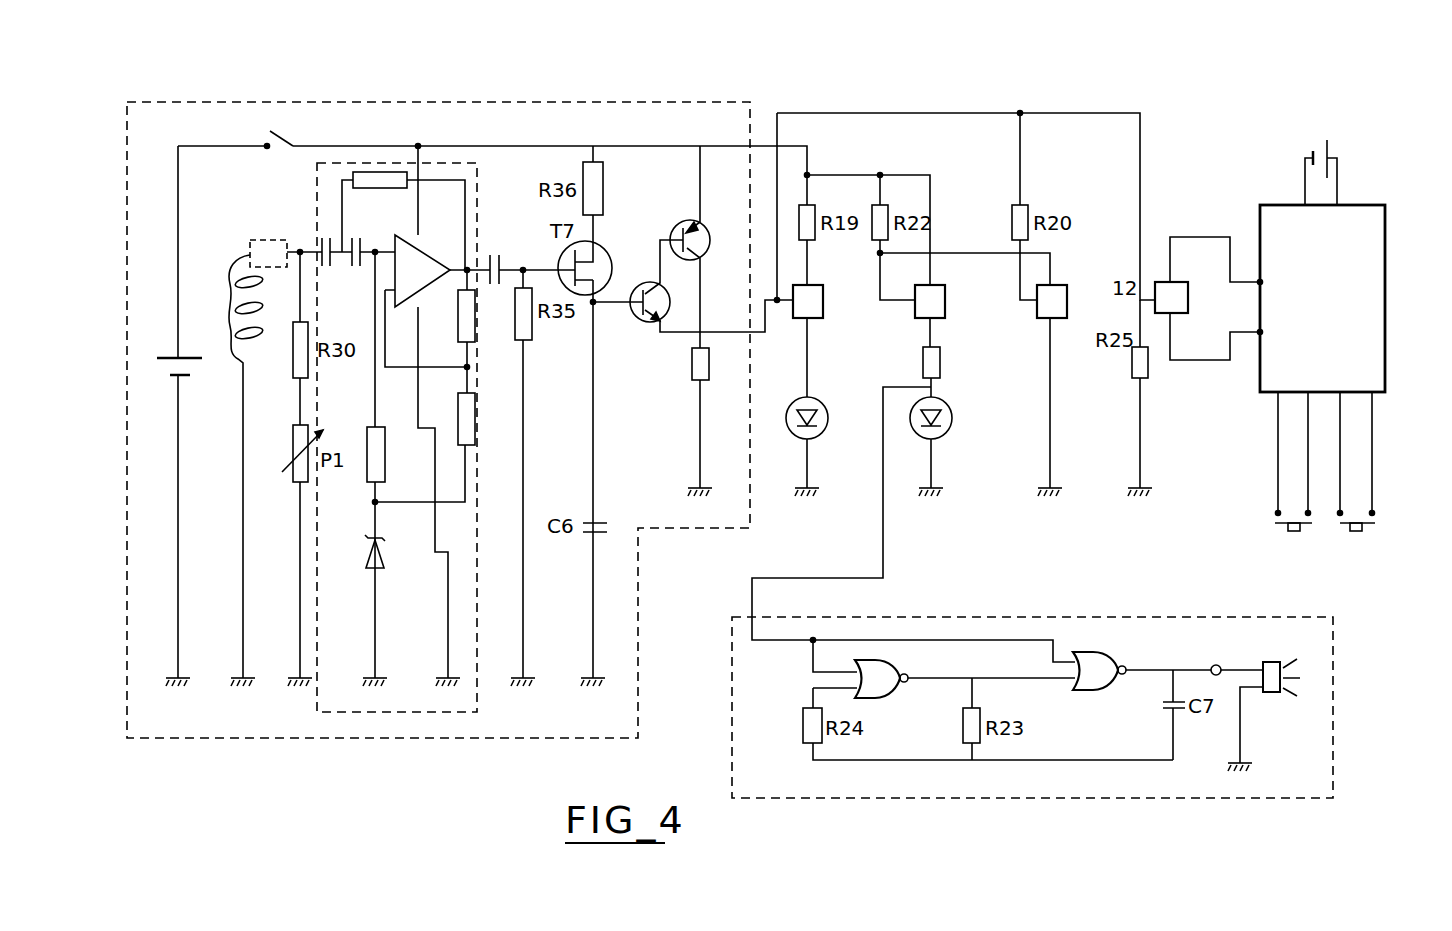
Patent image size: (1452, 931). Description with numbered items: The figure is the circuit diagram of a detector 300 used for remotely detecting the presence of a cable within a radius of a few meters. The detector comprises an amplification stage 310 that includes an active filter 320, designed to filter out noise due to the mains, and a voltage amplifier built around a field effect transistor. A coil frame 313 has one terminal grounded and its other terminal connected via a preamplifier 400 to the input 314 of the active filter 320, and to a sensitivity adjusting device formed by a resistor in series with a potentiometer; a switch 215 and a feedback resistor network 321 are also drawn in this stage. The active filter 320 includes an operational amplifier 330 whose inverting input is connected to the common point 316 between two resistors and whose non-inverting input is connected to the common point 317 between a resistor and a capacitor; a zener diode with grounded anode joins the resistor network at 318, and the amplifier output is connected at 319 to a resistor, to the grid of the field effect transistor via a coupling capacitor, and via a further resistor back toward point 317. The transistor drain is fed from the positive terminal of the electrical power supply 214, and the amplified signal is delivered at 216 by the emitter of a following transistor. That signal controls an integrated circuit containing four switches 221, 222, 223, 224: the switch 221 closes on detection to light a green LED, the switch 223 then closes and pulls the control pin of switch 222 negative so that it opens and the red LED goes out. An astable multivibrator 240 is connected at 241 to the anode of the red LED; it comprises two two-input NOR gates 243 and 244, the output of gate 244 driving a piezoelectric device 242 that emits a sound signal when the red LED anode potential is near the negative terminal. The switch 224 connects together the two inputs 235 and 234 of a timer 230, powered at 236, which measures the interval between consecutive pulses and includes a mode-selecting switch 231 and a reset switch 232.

The amplification stage 310 is at (203, 100).
The detector 300 is at (329, 86).
The active filter 320 is at (478, 188).
The switch 215 is at (283, 135).
The electrical power supply 214 is at (170, 358).
The coil frame 313 is at (224, 288).
The preamplifier 400 is at (255, 232).
The input of the active filter 314 is at (300, 250).
The common point between resistor R33 and capacitor C30 317 is at (375, 252).
The feedback resistor network 321 is at (342, 205).
The operational amplifier 330 is at (428, 255).
The connection point to resistor R32 318 is at (457, 505).
The common point between resistors R31 and R32 316 is at (467, 367).
The output connection point of the amplifier 319 is at (467, 268).
The amplified signal output 216 is at (672, 333).
The switch 221 is at (823, 300).
The switch 222 is at (945, 300).
The switch 223 is at (1067, 305).
The switch 224 is at (1165, 315).
The timer input 235 is at (1258, 281).
The timer input 234 is at (1258, 334).
The timer 230 is at (1385, 350).
The timer power supply connection 236 is at (1305, 165).
The operating mode selection switch 231 is at (1275, 522).
The reset switch 232 is at (1367, 524).
The astable multivibrator 240 is at (732, 688).
The multivibrator connection point 241 is at (883, 535).
The NOR gate 243 is at (880, 698).
The NOR gate 244 is at (1095, 690).
The piezoelectric device 242 is at (1270, 693).